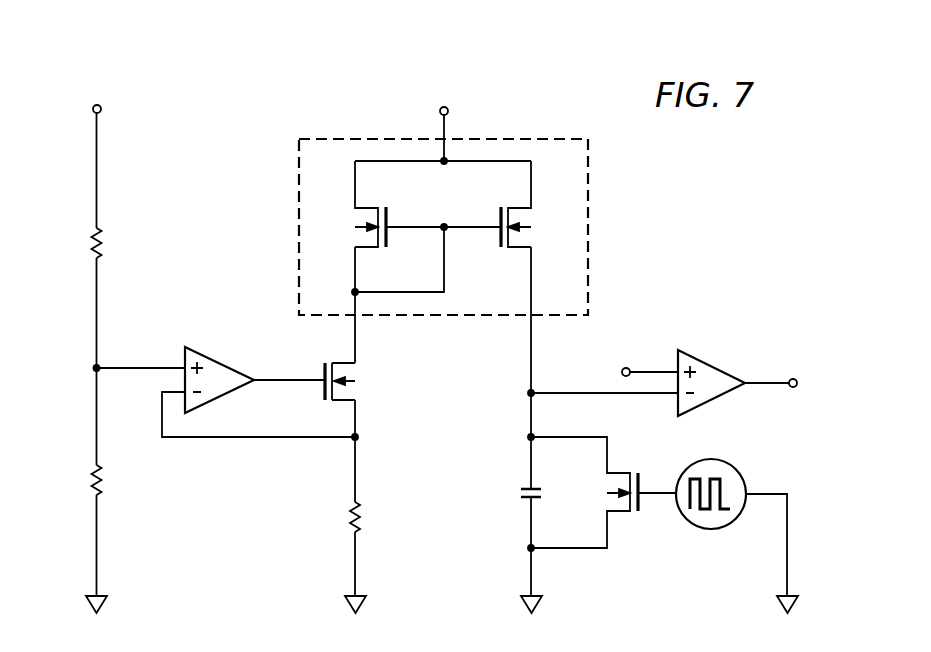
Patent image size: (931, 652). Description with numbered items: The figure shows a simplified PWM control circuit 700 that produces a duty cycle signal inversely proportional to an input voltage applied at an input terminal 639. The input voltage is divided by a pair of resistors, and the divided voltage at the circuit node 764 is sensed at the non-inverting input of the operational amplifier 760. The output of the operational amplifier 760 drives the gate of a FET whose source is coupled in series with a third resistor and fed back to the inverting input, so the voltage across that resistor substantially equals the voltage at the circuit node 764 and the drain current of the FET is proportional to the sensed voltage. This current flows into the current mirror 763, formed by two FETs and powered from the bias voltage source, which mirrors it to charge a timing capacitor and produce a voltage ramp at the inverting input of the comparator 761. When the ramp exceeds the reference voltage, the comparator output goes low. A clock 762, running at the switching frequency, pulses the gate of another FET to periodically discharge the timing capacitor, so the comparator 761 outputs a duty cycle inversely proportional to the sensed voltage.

The PWM control circuit 700 is at (225, 71).
The high voltage input terminal 639 is at (92, 111).
The current mirror 763 is at (295, 182).
The circuit node 764 is at (100, 366).
The operational amplifier 760 is at (218, 362).
The comparator 761 is at (712, 364).
The clock 762 is at (712, 529).